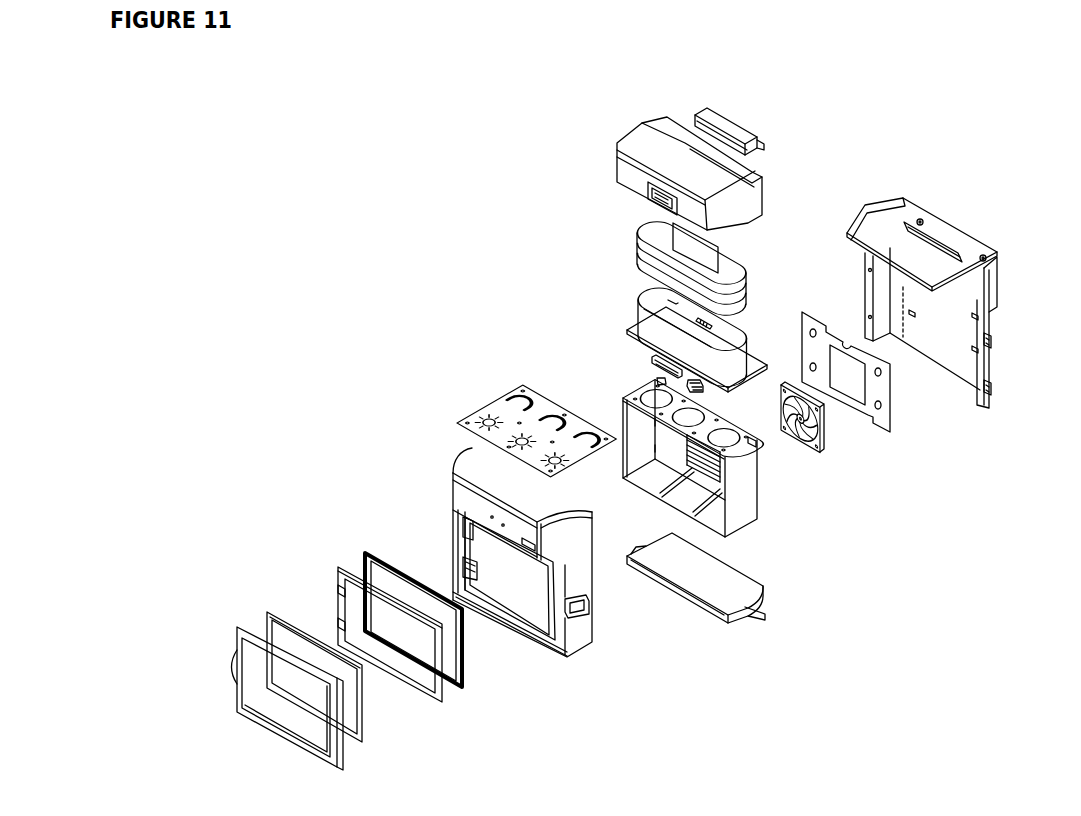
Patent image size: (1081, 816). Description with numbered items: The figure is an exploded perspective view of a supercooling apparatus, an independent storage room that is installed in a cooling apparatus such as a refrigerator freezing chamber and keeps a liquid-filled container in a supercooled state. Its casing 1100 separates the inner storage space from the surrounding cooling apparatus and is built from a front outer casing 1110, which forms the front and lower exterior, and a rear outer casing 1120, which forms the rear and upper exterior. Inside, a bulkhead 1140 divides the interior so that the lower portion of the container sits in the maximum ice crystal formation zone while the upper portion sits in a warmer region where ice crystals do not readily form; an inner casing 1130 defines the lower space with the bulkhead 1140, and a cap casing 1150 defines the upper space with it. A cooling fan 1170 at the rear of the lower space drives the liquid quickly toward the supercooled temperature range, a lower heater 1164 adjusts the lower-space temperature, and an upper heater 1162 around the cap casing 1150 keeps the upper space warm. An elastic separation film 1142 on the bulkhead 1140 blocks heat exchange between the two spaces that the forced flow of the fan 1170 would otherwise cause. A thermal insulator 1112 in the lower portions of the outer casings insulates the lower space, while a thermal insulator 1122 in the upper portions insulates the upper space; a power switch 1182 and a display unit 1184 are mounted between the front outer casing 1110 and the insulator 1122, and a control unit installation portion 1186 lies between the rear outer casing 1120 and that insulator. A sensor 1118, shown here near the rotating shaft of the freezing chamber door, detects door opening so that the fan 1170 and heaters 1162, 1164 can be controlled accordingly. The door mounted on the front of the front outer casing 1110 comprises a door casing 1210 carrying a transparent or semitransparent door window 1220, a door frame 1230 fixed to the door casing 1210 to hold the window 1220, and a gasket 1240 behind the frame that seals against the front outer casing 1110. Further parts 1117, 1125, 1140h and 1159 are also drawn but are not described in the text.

The casing 1100 is at (351, 260).
The front outer casing 1110 is at (539, 565).
The thermal insulator 1112 is at (763, 600).
The inner door panel 1117 is at (548, 598).
The sensor 1118 is at (598, 612).
The rear outer casing 1120 is at (958, 303).
The thermal insulator 1122 is at (757, 193).
The fastening clip 1125 is at (978, 357).
The inner casing 1130 is at (766, 482).
The bulkhead 1140 is at (764, 442).
The mounting hole 1140h is at (738, 440).
The separation film 1142 is at (492, 402).
The cap casing 1150 is at (631, 303).
The slot 1159 is at (662, 294).
The upper heater 1162 is at (747, 274).
The lower heater 1164 is at (889, 410).
The cooling fan 1170 is at (816, 425).
The power switch 1182 is at (660, 380).
The display unit 1184 is at (652, 359).
The control unit installation portion 1186 is at (752, 133).
The door casing 1210 is at (238, 628).
The door window 1220 is at (268, 612).
The door frame 1230 is at (340, 567).
The gasket 1240 is at (370, 558).